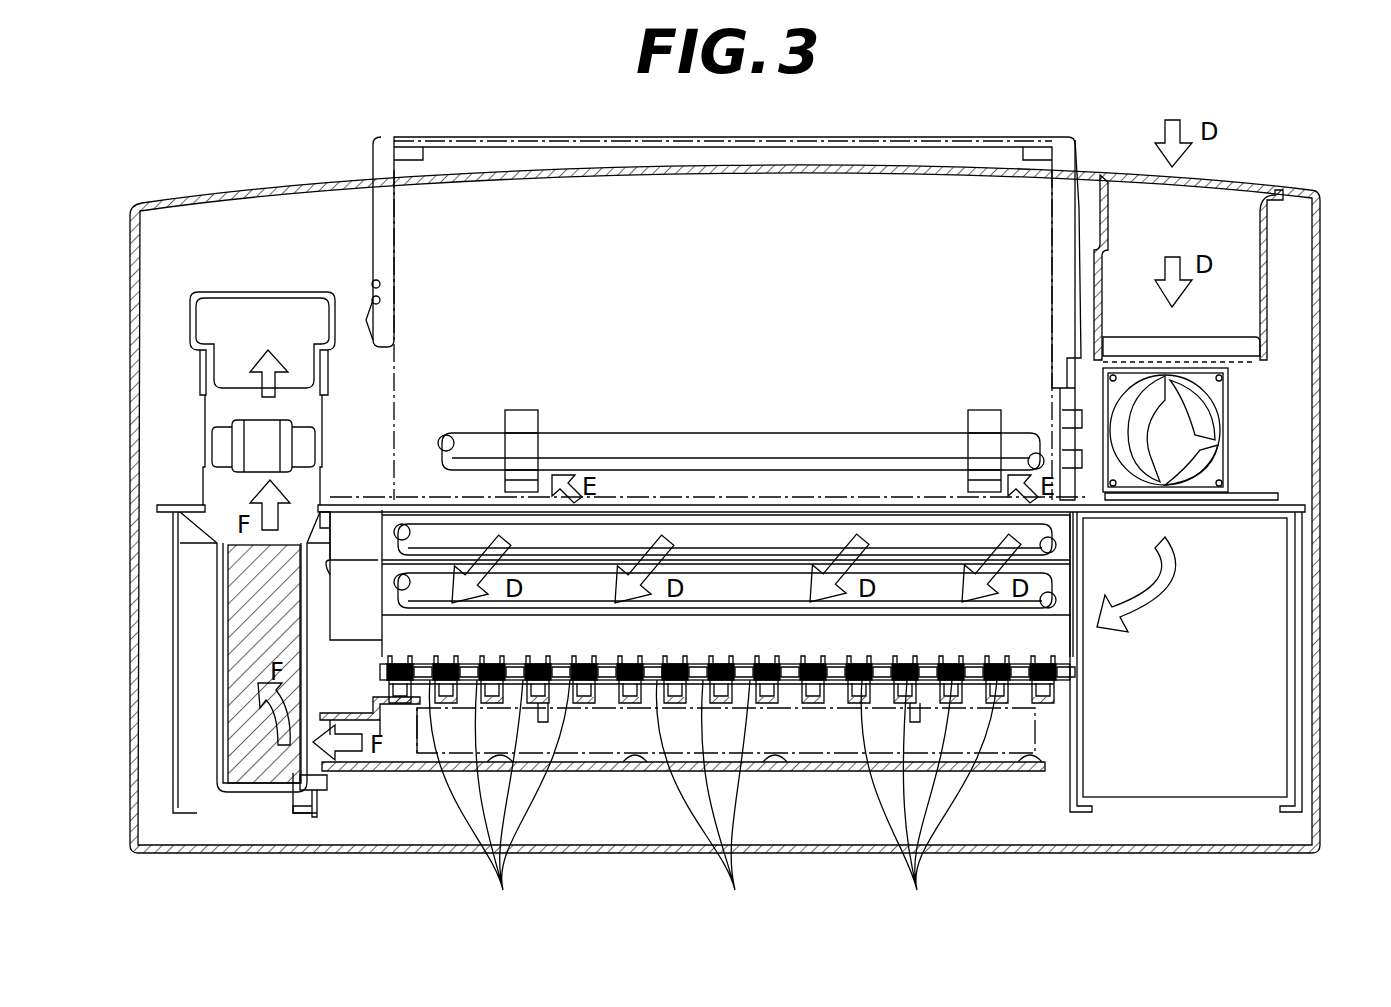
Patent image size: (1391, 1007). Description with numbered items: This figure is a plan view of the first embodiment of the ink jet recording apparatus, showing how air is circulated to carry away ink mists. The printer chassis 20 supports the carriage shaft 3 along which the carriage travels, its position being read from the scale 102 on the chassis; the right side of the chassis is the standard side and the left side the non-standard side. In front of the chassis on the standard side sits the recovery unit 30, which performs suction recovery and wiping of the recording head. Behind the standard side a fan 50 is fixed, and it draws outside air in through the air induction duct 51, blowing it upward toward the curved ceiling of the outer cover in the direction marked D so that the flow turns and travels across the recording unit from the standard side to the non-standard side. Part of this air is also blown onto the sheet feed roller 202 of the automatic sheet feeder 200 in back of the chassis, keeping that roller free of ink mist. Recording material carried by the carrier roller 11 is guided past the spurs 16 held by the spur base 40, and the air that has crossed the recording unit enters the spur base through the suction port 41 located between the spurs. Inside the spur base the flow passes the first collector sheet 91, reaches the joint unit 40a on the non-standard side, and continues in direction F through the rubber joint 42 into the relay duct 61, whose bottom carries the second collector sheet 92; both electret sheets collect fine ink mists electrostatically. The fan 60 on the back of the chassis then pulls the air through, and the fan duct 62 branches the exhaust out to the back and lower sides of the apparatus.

The carriage shaft 3 is at (810, 535).
The carrier roller 11 is at (695, 560).
The spur 16 is at (408, 660).
The printer chassis 20 is at (735, 500).
The recovery unit 30 is at (1270, 748).
The spur base 40 is at (630, 772).
The joint unit 40a is at (365, 775).
The suction port 41 is at (713, 801).
The rubber joint 42 is at (330, 795).
The fan 50 is at (1170, 436).
The air induction duct 51 is at (1240, 272).
The fan 60 is at (225, 440).
The relay duct 61 is at (215, 670).
The fan duct 62 is at (190, 308).
The first collector sheet 91 is at (828, 790).
The second collector sheet 92 is at (240, 578).
The scale 102 is at (355, 555).
The automatic sheet feeder 200 is at (1068, 145).
The sheet feed roller 202 is at (522, 438).